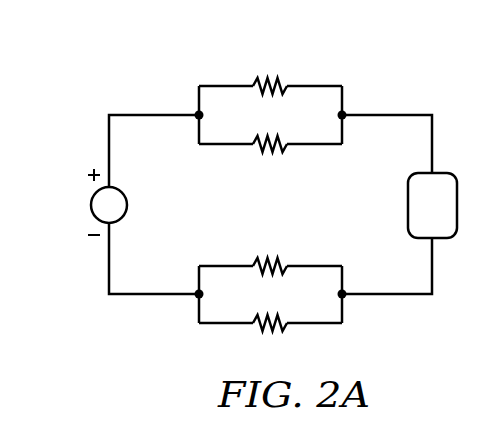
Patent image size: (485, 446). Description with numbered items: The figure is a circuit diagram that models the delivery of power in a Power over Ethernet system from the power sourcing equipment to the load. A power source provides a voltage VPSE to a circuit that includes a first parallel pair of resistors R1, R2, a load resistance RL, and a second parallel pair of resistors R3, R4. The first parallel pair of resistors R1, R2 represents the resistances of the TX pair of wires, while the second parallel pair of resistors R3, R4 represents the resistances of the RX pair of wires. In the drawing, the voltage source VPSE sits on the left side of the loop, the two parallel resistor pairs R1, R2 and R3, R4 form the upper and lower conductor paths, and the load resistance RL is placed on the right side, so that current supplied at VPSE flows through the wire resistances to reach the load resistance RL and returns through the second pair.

The resistor R1 is at (270, 69).
The resistor R2 is at (270, 162).
The resistor R3 is at (270, 249).
The resistor R4 is at (270, 341).
The load resistance RL is at (432, 205).
The PSE voltage VPSE is at (79, 202).